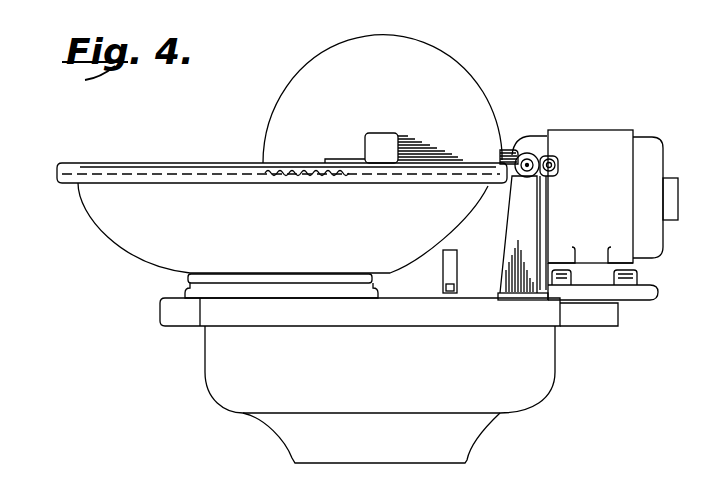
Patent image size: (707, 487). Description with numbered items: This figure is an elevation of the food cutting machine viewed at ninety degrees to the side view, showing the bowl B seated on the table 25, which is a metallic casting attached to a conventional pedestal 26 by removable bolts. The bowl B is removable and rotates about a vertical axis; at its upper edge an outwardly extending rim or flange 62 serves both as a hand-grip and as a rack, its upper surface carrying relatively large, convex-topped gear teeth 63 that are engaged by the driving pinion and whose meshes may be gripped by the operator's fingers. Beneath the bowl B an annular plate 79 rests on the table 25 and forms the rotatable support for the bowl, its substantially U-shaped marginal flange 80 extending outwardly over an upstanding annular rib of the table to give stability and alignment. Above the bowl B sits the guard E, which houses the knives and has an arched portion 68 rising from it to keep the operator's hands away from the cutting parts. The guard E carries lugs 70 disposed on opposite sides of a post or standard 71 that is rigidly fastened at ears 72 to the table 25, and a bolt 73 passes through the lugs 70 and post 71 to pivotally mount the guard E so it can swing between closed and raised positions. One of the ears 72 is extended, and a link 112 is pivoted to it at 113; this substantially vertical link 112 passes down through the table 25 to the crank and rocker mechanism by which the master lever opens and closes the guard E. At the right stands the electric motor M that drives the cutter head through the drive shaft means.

The guard E is at (439, 47).
The arched portion 68 is at (496, 89).
The rim or flange 62 is at (216, 184).
The gear teeth 63 is at (293, 172).
The bowl B is at (283, 228).
The annular plate 79 is at (366, 292).
The U-shaped marginal flange 80 is at (427, 274).
The table 25 is at (212, 332).
The pedestal 26 is at (243, 408).
The post or standard 71 is at (513, 243).
The ears 72 is at (516, 290).
The link 112 is at (552, 203).
The lugs 70 is at (511, 149).
The bolt 73 is at (531, 152).
The pivot 113 is at (558, 163).
The electric motor M is at (622, 128).